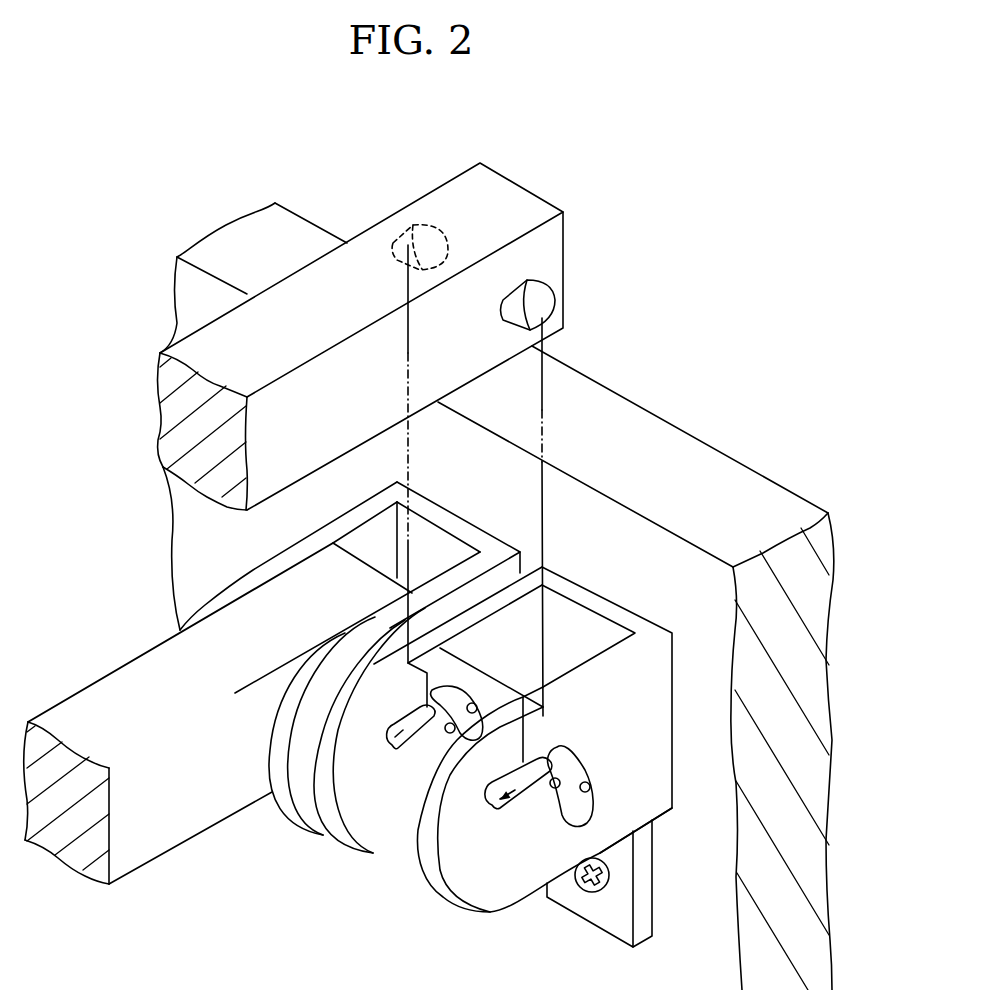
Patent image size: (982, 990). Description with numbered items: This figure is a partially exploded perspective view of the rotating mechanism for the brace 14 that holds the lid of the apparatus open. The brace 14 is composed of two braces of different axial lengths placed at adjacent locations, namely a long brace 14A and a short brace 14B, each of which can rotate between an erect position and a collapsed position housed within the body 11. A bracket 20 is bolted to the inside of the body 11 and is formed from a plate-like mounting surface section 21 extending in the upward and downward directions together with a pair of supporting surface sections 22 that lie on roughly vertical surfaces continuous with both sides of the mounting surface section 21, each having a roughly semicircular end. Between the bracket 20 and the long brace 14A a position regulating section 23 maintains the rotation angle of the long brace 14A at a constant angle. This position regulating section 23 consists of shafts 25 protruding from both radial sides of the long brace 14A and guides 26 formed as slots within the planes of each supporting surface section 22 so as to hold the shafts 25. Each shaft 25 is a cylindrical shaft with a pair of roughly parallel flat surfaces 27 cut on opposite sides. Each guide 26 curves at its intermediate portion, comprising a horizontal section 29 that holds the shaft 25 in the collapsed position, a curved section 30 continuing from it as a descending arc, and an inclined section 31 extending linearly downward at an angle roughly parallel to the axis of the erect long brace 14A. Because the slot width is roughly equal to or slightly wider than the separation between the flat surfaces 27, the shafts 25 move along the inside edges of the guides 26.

The body 11 is at (703, 445).
The brace 14 is at (142, 343).
The long brace 14A is at (488, 170).
The short brace 14B is at (123, 673).
The bracket 20 is at (431, 488).
The mounting surface section 21 is at (445, 518).
The supporting surface section 22 is at (254, 570).
The position regulating section 23 is at (552, 256).
The shaft 25 is at (393, 237).
The guide 26 is at (463, 680).
The flat surface 27 is at (418, 218).
The horizontal section 29 is at (388, 745).
The curved section 30 is at (445, 730).
The inclined section 31 is at (477, 718).